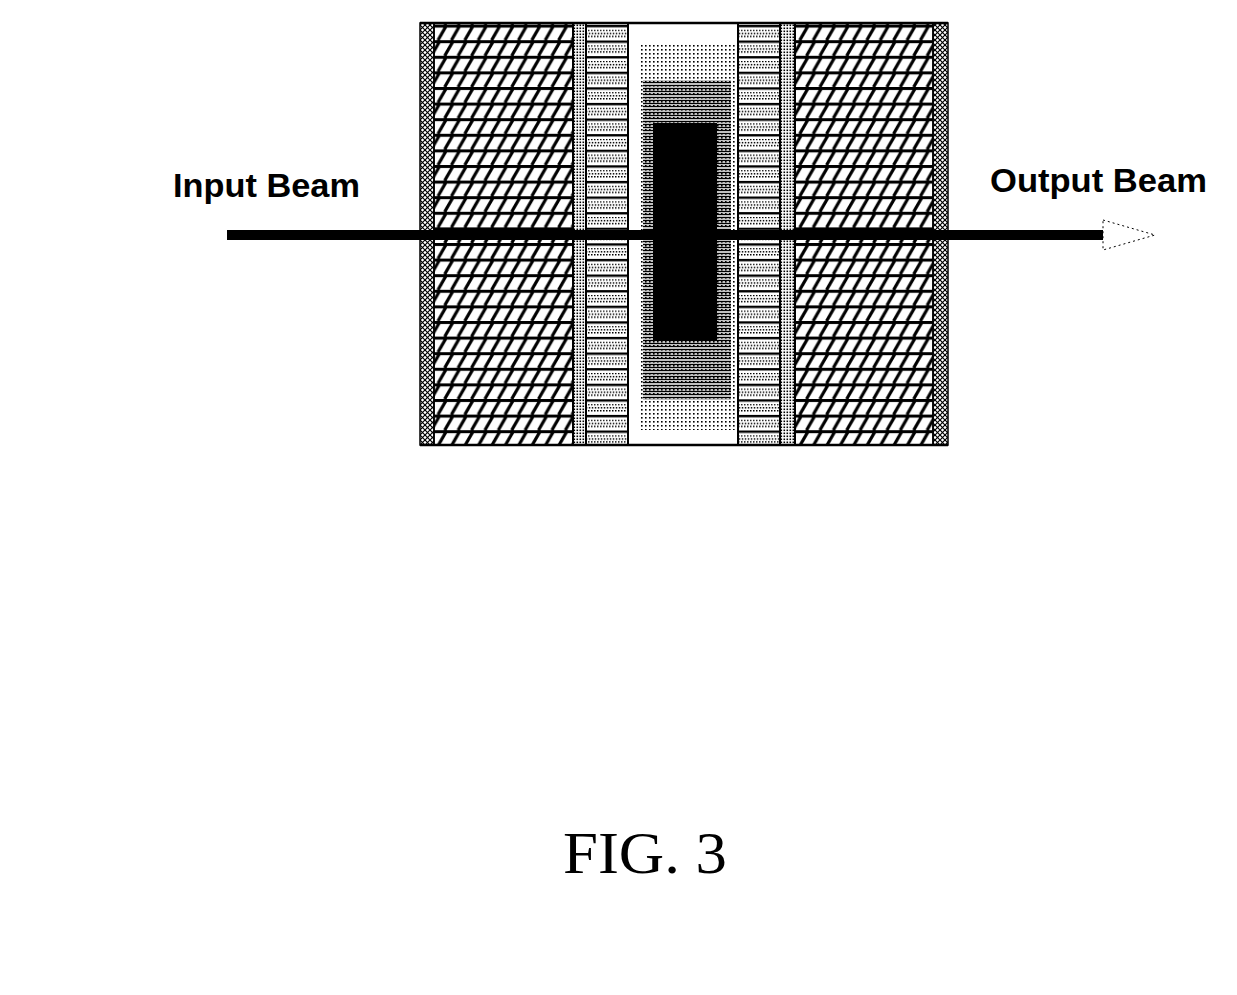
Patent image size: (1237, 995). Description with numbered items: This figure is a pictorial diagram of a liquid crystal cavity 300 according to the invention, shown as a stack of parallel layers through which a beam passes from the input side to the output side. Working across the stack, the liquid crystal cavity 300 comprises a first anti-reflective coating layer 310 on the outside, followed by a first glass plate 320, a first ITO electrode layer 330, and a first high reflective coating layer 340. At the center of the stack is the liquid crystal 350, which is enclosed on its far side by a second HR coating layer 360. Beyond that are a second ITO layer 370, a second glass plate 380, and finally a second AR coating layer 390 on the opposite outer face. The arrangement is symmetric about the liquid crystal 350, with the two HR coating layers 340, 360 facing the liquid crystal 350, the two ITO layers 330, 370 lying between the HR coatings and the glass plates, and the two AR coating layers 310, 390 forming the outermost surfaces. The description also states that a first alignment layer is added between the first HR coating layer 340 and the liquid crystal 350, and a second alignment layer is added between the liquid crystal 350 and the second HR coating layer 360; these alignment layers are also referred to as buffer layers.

The liquid crystal cavity 300 is at (528, 399).
The first anti-reflective (AR) coating layer 310 is at (431, 381).
The first glass plate 320 is at (503, 375).
The first ITO electrode layer 330 is at (573, 298).
The first high reflective (HR) coating layer 340 is at (609, 348).
The liquid crystal 350 is at (683, 390).
The second HR coating layer 360 is at (759, 399).
The second ITO layer 370 is at (789, 350).
The second glass plate 380 is at (864, 390).
The second AR coating layer 390 is at (947, 348).